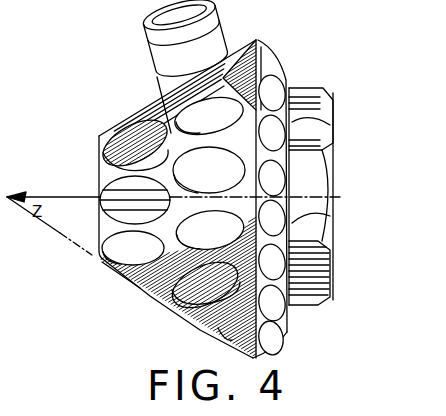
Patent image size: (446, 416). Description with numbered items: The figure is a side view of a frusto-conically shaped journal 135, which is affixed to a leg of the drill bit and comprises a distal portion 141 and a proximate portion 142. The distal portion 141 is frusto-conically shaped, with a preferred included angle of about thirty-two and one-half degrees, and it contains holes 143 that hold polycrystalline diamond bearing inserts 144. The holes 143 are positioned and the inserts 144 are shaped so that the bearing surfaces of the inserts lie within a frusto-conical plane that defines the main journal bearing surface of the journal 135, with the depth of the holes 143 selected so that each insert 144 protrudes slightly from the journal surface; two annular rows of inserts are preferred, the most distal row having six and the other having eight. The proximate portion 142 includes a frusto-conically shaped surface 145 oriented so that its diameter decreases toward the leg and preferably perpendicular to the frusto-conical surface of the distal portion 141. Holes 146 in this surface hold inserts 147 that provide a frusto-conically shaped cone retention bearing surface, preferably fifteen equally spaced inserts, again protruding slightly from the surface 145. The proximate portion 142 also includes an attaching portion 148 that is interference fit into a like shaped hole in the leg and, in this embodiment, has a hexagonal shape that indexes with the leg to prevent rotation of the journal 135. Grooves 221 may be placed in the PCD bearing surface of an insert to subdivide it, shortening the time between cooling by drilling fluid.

The journal 135 is at (260, 22).
The distal portion 141 is at (250, 361).
The proximate portion 142 is at (265, 30).
The holes 143 is at (127, 240).
The polycrystalline diamond bearing inserts 144 is at (100, 197).
The frusto-conically shaped surface 145 is at (157, 20).
The holes 146 is at (333, 130).
The inserts 147 is at (284, 219).
The attaching portion 148 is at (320, 258).
The grooves 221 is at (123, 118).